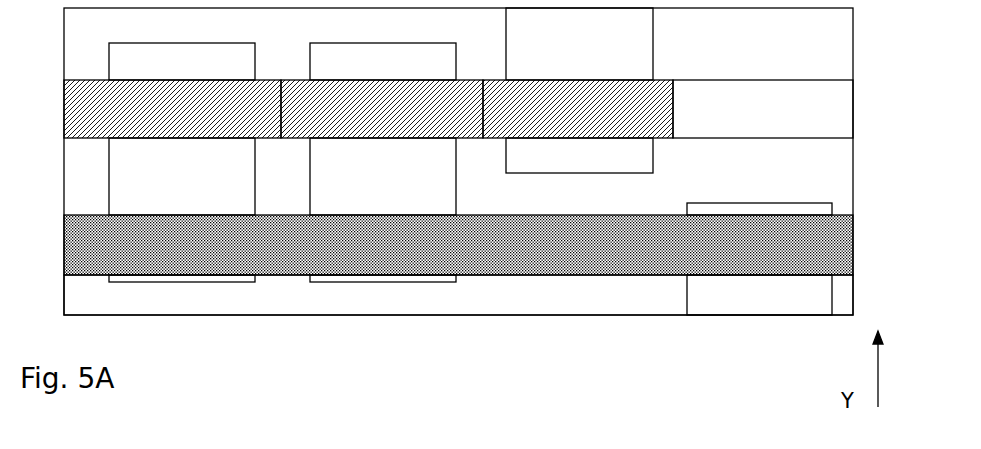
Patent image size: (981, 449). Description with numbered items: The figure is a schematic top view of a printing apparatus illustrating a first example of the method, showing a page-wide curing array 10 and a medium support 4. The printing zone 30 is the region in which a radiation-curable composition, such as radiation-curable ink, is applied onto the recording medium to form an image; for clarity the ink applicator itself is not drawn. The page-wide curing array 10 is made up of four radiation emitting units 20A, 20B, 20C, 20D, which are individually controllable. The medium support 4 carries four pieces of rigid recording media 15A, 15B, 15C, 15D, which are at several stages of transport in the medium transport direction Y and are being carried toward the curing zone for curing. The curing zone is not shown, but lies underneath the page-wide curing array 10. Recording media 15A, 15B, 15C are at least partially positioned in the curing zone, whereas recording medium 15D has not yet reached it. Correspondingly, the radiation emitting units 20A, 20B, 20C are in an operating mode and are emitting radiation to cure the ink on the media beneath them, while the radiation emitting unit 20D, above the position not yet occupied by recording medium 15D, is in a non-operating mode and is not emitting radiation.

The page-wide curing array 10 is at (854, 105).
The medium support 4 is at (177, 300).
The printing zone 30 is at (282, 258).
The recording medium 15A is at (205, 195).
The recording medium 15B is at (405, 193).
The recording medium 15C is at (600, 58).
The recording medium 15D is at (787, 310).
The radiation emitting unit 20A is at (198, 125).
The radiation emitting unit 20B is at (407, 125).
The radiation emitting unit 20C is at (605, 123).
The radiation emitting unit 20D is at (779, 123).